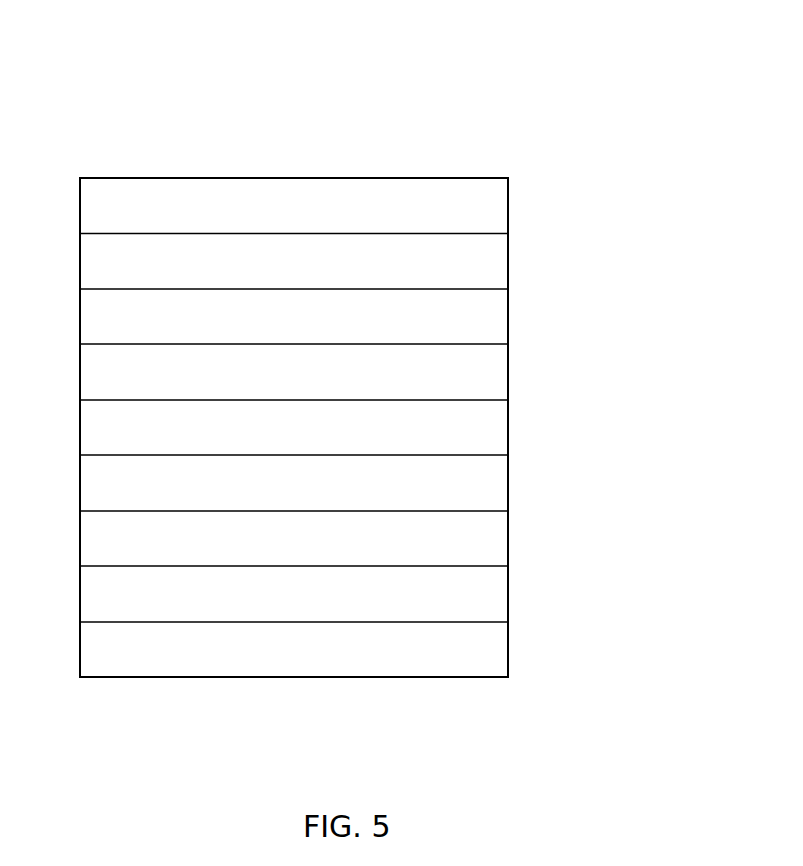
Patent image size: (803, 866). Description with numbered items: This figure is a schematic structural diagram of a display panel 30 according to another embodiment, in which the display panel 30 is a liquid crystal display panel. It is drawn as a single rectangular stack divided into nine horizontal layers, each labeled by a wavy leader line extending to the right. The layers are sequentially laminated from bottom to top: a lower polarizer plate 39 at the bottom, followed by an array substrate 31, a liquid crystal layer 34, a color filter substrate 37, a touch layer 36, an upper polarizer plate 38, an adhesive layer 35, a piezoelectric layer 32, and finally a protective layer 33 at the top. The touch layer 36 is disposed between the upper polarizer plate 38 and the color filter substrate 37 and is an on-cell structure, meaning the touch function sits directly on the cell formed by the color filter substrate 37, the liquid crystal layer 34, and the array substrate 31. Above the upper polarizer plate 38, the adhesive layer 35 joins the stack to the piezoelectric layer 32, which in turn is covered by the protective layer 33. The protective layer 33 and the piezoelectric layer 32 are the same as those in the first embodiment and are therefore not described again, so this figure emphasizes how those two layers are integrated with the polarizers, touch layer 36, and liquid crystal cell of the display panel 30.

The display panel 30 is at (150, 125).
The protective layer 33 is at (487, 209).
The piezoelectric layer 32 is at (487, 264).
The adhesive layer 35 is at (487, 320).
The upper polarizer plate 38 is at (487, 375).
The touch layer 36 is at (487, 431).
The color filter substrate 37 is at (487, 486).
The liquid crystal layer 34 is at (487, 542).
The array substrate 31 is at (487, 597).
The lower polarizer plate 39 is at (487, 653).